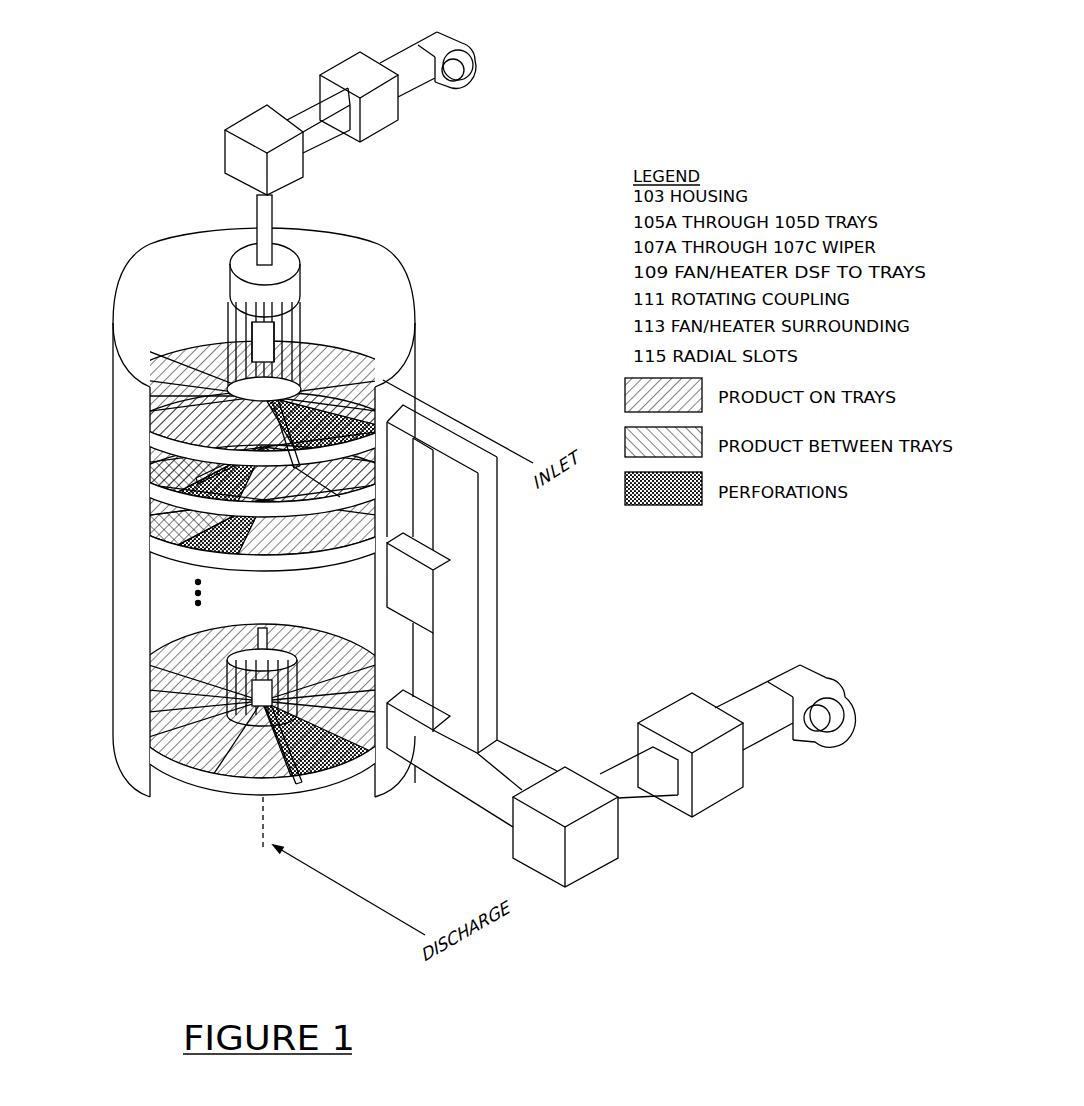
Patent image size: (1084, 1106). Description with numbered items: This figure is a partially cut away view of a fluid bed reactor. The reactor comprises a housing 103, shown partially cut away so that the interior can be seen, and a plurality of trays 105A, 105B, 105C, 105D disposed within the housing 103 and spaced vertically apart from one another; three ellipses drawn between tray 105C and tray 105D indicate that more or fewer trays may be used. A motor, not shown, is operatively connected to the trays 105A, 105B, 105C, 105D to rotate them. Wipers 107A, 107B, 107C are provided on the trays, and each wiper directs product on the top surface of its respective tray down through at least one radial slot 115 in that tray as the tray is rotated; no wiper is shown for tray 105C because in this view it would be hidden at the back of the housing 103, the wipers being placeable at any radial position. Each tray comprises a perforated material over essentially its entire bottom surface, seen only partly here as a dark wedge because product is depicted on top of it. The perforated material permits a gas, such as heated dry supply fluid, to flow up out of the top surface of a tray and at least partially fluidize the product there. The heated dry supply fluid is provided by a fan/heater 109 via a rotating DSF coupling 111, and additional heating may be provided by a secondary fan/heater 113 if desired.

The housing 103 is at (170, 292).
The tray 105A is at (163, 442).
The tray 105B is at (160, 490).
The tray 105C is at (160, 543).
The tray 105D is at (160, 763).
The wiper 107A is at (305, 407).
The wiper 107B is at (200, 473).
The wiper 107C is at (298, 785).
The fan/heater 109 is at (387, 116).
The rotating DSF coupling 111 is at (303, 280).
The secondary fan/heater 113 is at (718, 770).
The radial slot 115 is at (405, 540).